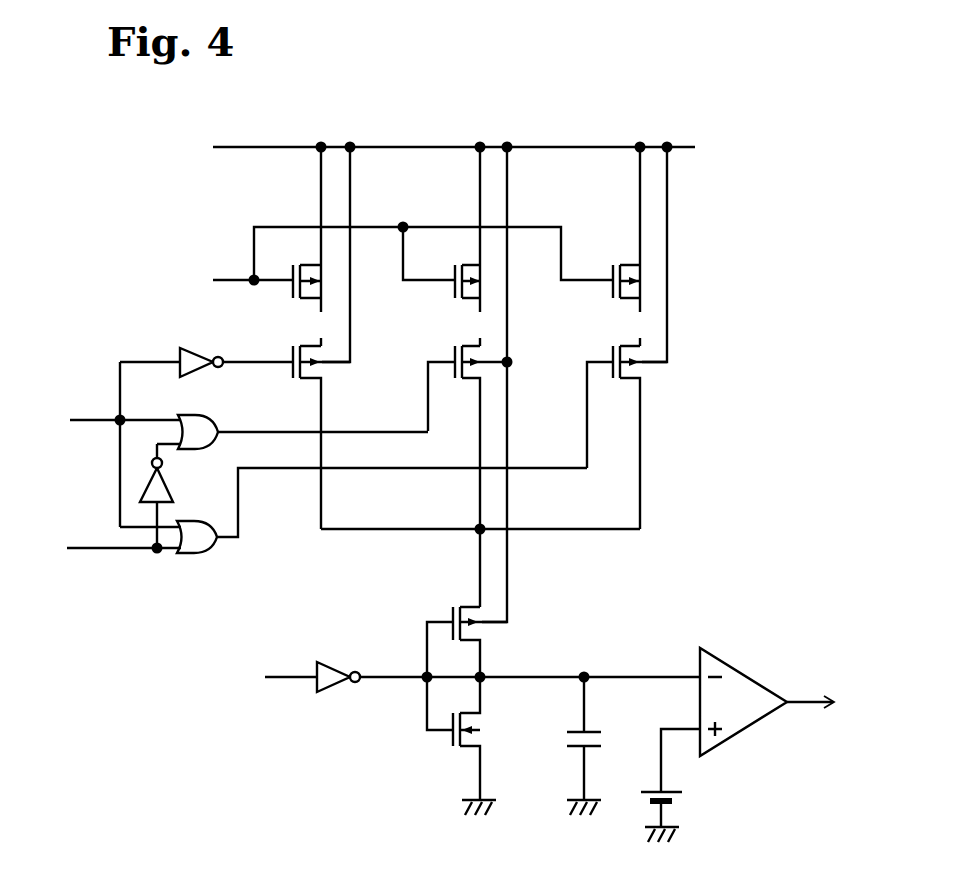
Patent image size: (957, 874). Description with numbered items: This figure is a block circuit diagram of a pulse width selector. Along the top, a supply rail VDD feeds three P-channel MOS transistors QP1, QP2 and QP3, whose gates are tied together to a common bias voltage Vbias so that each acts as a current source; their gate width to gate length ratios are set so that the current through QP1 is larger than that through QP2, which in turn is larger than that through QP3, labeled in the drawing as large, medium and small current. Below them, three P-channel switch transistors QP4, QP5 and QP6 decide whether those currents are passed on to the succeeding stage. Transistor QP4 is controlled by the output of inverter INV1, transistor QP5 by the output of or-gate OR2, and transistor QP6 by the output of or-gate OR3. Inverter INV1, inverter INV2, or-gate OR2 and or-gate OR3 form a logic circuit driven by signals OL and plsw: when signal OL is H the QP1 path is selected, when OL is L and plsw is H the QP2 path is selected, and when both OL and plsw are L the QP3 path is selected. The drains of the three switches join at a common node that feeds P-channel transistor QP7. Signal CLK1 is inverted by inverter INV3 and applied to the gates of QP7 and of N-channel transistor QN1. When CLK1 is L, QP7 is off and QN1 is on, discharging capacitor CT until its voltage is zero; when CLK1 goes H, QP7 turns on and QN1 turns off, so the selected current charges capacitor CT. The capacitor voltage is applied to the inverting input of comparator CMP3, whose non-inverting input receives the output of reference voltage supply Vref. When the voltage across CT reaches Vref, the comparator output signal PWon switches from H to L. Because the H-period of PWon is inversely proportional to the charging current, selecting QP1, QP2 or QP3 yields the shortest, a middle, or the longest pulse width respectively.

The supply voltage rail VDD is at (427, 379).
The bias voltage Vbias is at (384, 257).
The P-channel MOS transistor QP1 is at (289, 301).
The P-channel MOS transistor QP2 is at (416, 301).
The P-channel MOS transistor QP3 is at (583, 301).
The P-channel MOS transistor QP4 is at (309, 437).
The P-channel MOS transistor QP5 is at (470, 437).
The P-channel MOS transistor QP6 is at (627, 437).
The P-channel MOS transistor QP7 is at (457, 663).
The N-channel MOS transistor QN1 is at (464, 746).
The inverter INV1 is at (206, 350).
The inverter INV2 is at (180, 496).
The inverter INV3 is at (508, 666).
The or-gate OR2 is at (292, 421).
The or-gate OR3 is at (353, 526).
The signal OL is at (109, 444).
The signal plsw is at (100, 548).
The signal CLK1 is at (266, 677).
The capacitor CT is at (600, 746).
The comparator CMP3 is at (737, 664).
The reference voltage supply Vref is at (681, 812).
The output signal PWon is at (841, 702).